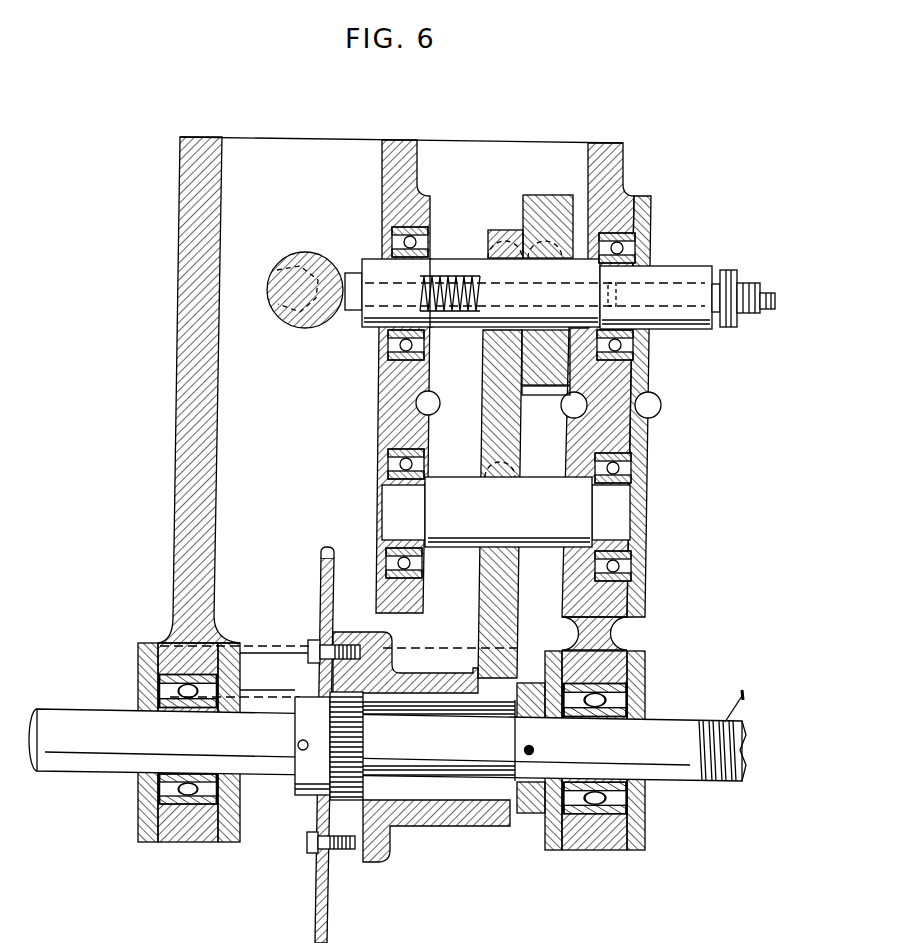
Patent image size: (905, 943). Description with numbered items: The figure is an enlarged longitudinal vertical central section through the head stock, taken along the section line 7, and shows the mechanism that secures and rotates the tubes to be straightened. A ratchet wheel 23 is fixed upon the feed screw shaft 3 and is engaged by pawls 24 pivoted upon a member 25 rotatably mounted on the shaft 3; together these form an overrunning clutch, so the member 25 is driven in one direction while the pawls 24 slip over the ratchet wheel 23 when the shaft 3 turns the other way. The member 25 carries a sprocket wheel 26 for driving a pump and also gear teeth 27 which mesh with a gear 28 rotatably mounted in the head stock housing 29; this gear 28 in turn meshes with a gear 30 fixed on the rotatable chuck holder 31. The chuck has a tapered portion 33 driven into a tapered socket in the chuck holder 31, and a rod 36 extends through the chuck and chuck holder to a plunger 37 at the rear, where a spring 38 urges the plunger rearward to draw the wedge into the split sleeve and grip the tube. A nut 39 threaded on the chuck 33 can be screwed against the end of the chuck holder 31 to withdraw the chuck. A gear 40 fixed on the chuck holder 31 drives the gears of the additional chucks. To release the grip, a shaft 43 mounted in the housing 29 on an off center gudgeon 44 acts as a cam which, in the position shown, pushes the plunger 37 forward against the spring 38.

The feed screw shaft 3 is at (387, 735).
The section line 7- 7 is at (292, 122).
The ratchet wheel 23 is at (363, 740).
The pawls 24 is at (343, 675).
The member 25 is at (399, 681).
The sprocket wheel 26 is at (322, 579).
The gear teeth 27 is at (495, 827).
The gear 28 is at (490, 576).
The head stock housing 29 is at (438, 155).
The gear 30 is at (498, 232).
The chuck holder 31 is at (466, 262).
The tapered portion 33 is at (676, 278).
The rod 36 is at (762, 313).
The plunger 37 is at (352, 272).
The spring 38 is at (457, 314).
The nut 39 is at (738, 276).
The gear 40 is at (543, 205).
The shaft 43 is at (306, 266).
The off center gudgeon 44 is at (287, 319).